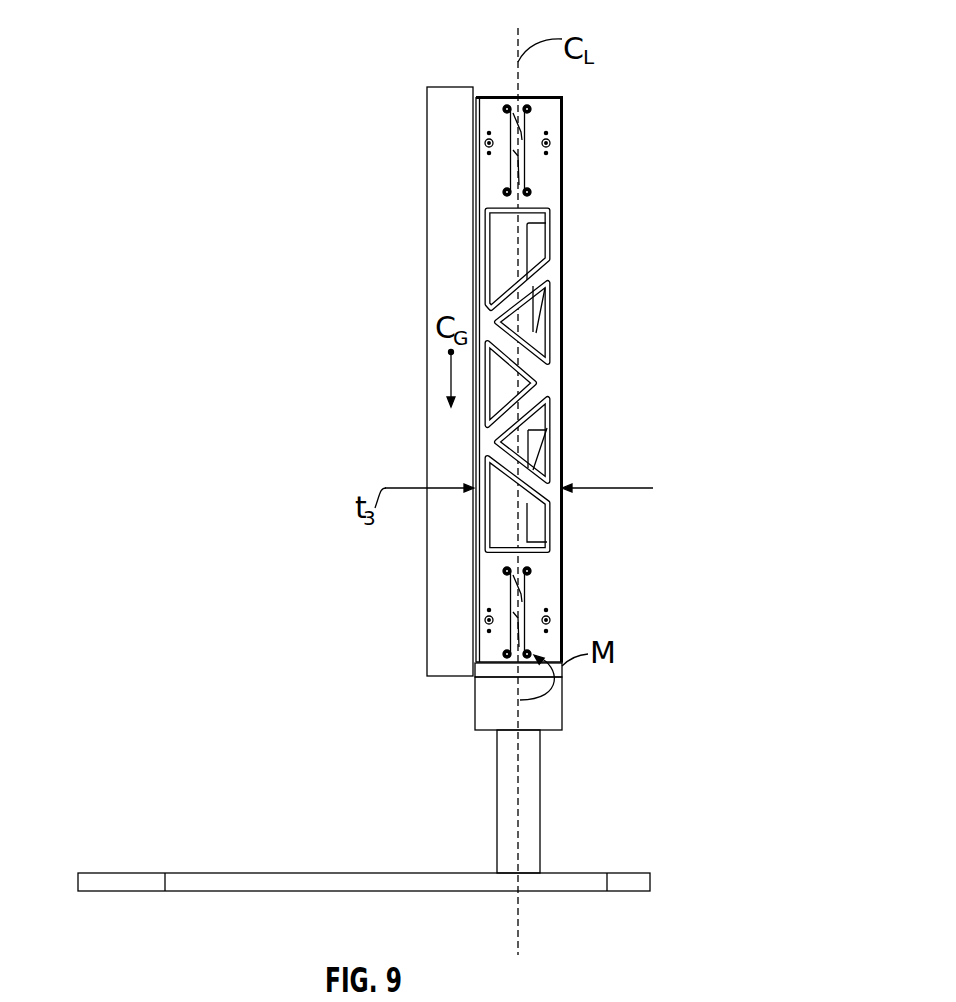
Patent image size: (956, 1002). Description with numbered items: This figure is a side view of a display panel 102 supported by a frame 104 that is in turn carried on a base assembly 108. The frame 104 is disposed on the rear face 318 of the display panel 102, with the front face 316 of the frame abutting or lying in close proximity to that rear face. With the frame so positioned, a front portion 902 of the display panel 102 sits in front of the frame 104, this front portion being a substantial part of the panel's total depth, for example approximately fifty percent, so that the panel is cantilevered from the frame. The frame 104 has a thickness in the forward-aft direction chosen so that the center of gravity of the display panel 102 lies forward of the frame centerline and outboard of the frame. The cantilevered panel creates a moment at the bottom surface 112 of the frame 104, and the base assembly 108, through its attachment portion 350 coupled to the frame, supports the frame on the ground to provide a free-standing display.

The display panel 102 is at (400, 146).
The frame 104 is at (519, 338).
The base assembly 108 is at (557, 826).
The bottom surface 112 is at (486, 690).
The front face 316 is at (474, 632).
The rear face 318 is at (479, 96).
The attachment portion 350 is at (547, 708).
The front portion 902 is at (441, 80).